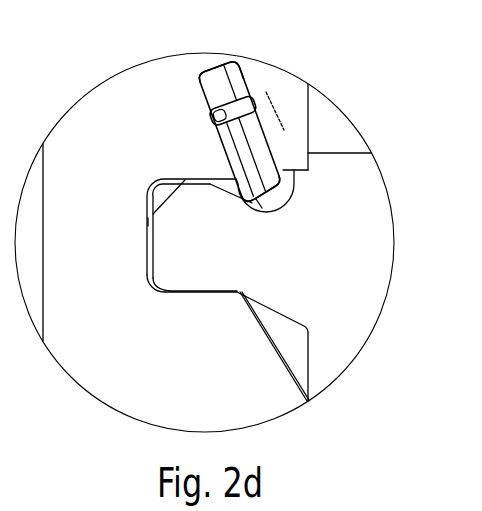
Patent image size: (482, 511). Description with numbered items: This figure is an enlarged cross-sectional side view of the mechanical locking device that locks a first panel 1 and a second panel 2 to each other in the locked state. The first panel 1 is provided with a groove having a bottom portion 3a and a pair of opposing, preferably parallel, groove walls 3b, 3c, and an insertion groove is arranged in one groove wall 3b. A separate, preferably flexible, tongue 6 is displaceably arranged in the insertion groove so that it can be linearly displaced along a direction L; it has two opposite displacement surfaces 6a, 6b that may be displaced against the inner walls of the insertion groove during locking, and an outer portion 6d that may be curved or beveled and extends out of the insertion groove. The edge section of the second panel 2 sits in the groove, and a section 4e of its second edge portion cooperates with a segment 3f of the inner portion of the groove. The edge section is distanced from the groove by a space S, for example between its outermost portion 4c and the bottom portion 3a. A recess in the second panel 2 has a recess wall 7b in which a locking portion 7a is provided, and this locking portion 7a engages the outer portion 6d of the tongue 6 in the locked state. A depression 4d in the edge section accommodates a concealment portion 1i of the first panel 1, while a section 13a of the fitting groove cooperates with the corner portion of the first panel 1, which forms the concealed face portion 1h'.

The first panel 1 is at (100, 250).
The second panel 2 is at (335, 270).
The section of the fitting groove 13a is at (309, 161).
The face portion 1h' is at (327, 172).
The concealment portion 1i is at (300, 368).
The locking portion 7a is at (291, 191).
The recess wall 7b is at (250, 203).
The outermost portion of the edge section 4c is at (147, 264).
The depression 4d is at (278, 354).
The section of the second edge portion 4e is at (206, 294).
The bottom portion 3a is at (146, 205).
The groove wall 3b is at (217, 186).
The groove wall 3c is at (211, 292).
The segment of the inner portion 3f is at (191, 184).
The space S is at (140, 222).
The separate tongue 6 is at (233, 68).
The displacement surface 6a is at (249, 68).
The displacement surface 6b is at (210, 114).
The outer portion 6d is at (249, 216).
The direction L is at (277, 111).